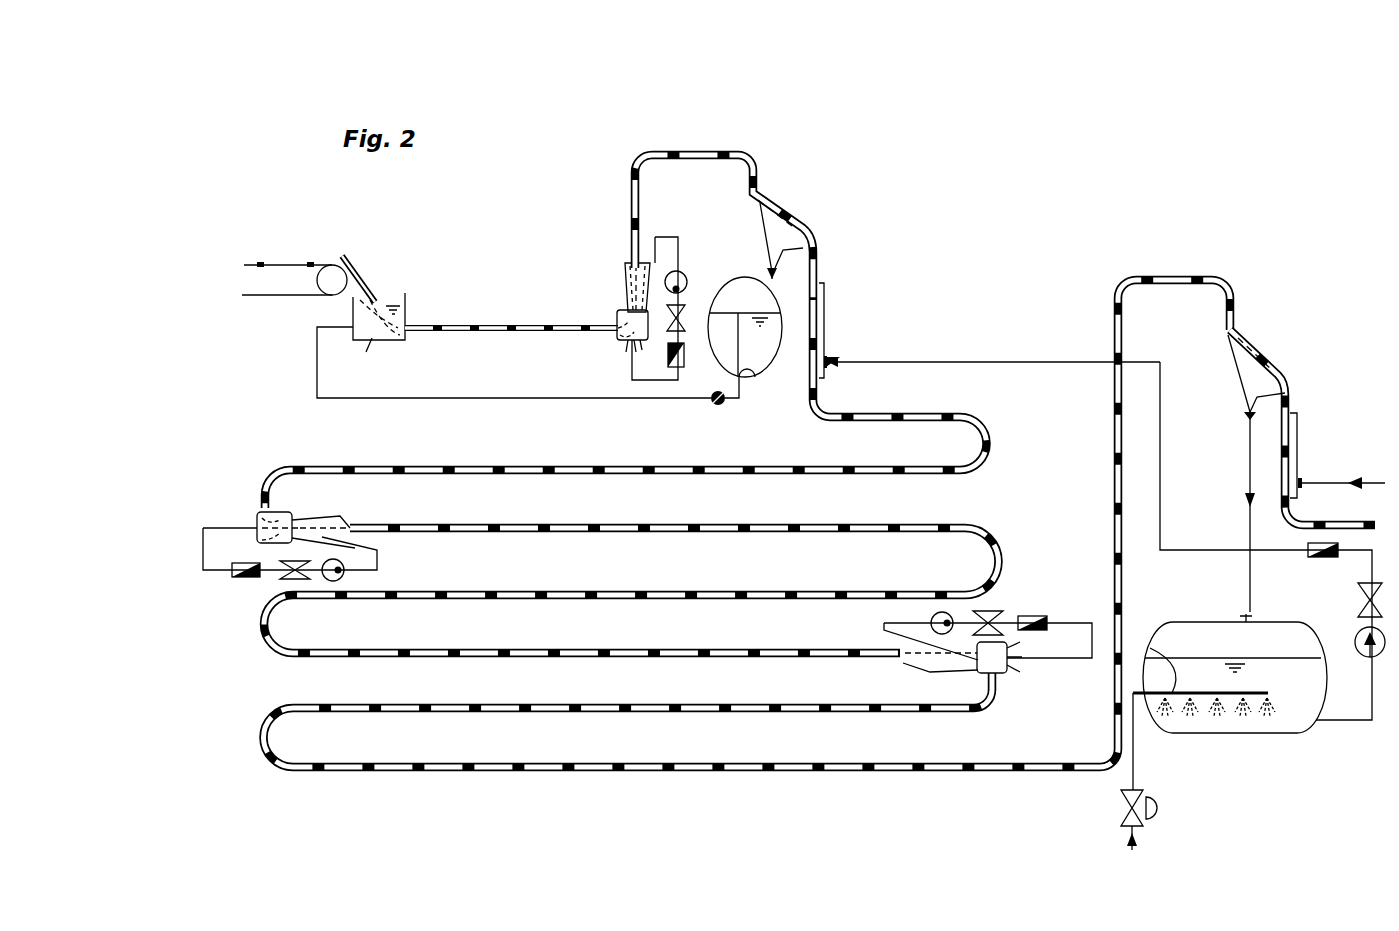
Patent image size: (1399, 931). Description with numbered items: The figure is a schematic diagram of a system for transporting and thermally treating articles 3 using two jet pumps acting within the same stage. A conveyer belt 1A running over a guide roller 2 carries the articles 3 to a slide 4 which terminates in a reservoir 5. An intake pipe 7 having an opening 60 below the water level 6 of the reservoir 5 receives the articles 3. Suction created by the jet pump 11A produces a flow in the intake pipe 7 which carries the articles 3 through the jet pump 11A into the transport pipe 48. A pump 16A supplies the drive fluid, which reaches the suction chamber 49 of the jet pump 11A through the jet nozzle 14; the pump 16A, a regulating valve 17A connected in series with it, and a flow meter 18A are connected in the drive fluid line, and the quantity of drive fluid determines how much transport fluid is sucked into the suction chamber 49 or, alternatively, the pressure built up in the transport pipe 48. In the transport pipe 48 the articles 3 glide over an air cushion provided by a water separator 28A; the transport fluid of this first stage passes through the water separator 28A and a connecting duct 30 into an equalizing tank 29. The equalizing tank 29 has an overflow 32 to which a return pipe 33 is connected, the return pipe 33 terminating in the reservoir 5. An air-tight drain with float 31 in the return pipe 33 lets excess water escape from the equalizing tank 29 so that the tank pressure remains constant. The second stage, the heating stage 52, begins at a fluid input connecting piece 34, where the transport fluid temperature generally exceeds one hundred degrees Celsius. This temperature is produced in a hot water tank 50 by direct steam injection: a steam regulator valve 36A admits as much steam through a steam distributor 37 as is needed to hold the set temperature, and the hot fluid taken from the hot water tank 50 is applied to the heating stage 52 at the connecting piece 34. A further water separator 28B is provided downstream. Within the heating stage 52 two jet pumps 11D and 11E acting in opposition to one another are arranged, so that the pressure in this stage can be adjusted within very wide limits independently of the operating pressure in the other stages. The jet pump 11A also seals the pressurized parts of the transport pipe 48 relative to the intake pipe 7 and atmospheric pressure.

The conveyer belt 1A is at (268, 297).
The guide roller 2 is at (327, 290).
The articles 3 is at (262, 264).
The slide 4 is at (360, 272).
The reservoir 5 is at (407, 312).
The water level 6 is at (392, 298).
The intake pipe 7 is at (478, 332).
The jet pump 11A is at (622, 300).
The jet pump 11D is at (330, 500).
The jet pump 11E is at (958, 675).
The jet nozzle 14 is at (628, 344).
The pump 16A is at (681, 271).
The regulating valve 17A is at (688, 303).
The flow meter 18A is at (684, 365).
The water separator 28A is at (767, 232).
The water separator 28B is at (1245, 381).
The equalizing tank 29 is at (782, 345).
The connecting duct 30 is at (775, 277).
The drain with float 31 is at (712, 404).
The overflow 32 is at (748, 370).
The return pipe 33 is at (485, 400).
The fluid input connecting piece 34 is at (822, 380).
The steam regulator valve 36A is at (1162, 806).
The steam distributor 37 is at (1152, 652).
The transport pipe 48 is at (630, 212).
The suction chamber 49 is at (620, 338).
The hot water tank 50 is at (1280, 722).
The heating stage 52 is at (998, 478).
The opening 60 is at (368, 342).